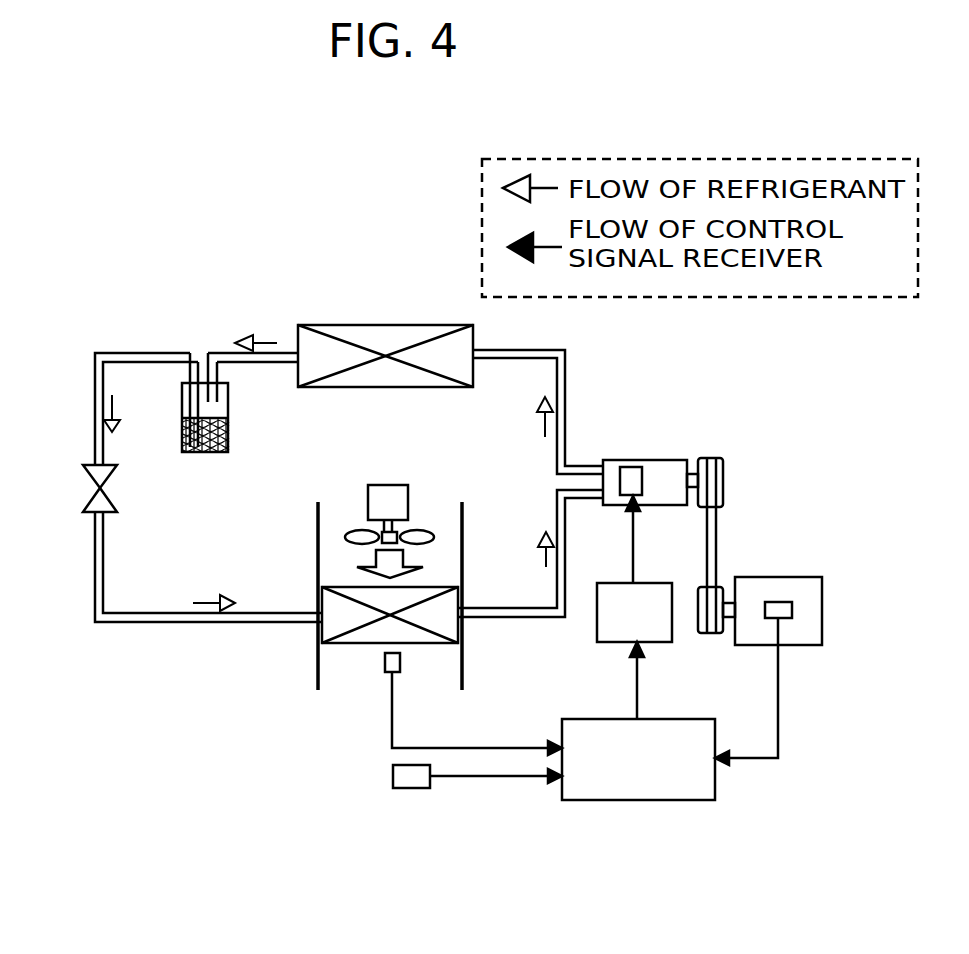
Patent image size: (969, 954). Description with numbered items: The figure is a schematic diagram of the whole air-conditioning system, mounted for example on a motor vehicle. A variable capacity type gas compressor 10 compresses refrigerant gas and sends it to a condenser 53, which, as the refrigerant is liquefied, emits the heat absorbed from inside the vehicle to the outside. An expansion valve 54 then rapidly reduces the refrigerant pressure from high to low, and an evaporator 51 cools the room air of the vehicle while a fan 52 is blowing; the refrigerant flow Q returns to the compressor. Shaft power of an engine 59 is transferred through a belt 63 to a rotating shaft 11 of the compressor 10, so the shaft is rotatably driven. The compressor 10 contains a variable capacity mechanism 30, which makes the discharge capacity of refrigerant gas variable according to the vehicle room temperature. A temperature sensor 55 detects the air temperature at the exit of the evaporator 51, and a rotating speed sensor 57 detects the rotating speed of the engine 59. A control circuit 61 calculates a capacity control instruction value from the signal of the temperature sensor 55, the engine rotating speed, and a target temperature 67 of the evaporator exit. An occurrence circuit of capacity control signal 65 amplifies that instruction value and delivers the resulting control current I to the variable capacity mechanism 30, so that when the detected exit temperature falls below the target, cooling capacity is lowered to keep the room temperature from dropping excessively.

The variable capacity type gas compressor 10 is at (635, 460).
The rotating shaft 11 is at (697, 458).
The variable capacity mechanism 30 is at (619, 492).
The evaporator 51 is at (430, 644).
The fan 52 is at (388, 485).
The condenser 53 is at (386, 325).
The expansion valve 54 is at (99, 495).
The temperature sensor 55 is at (385, 665).
The rotating speed sensor 57 is at (792, 610).
The engine 59 is at (778, 577).
The control circuit 61 is at (635, 801).
The belt 63 is at (718, 517).
The occurrence circuit of capacity control signal 65 is at (655, 643).
The target temperature 67 is at (392, 777).
The heat load Q is at (556, 463).
The control current I is at (638, 545).